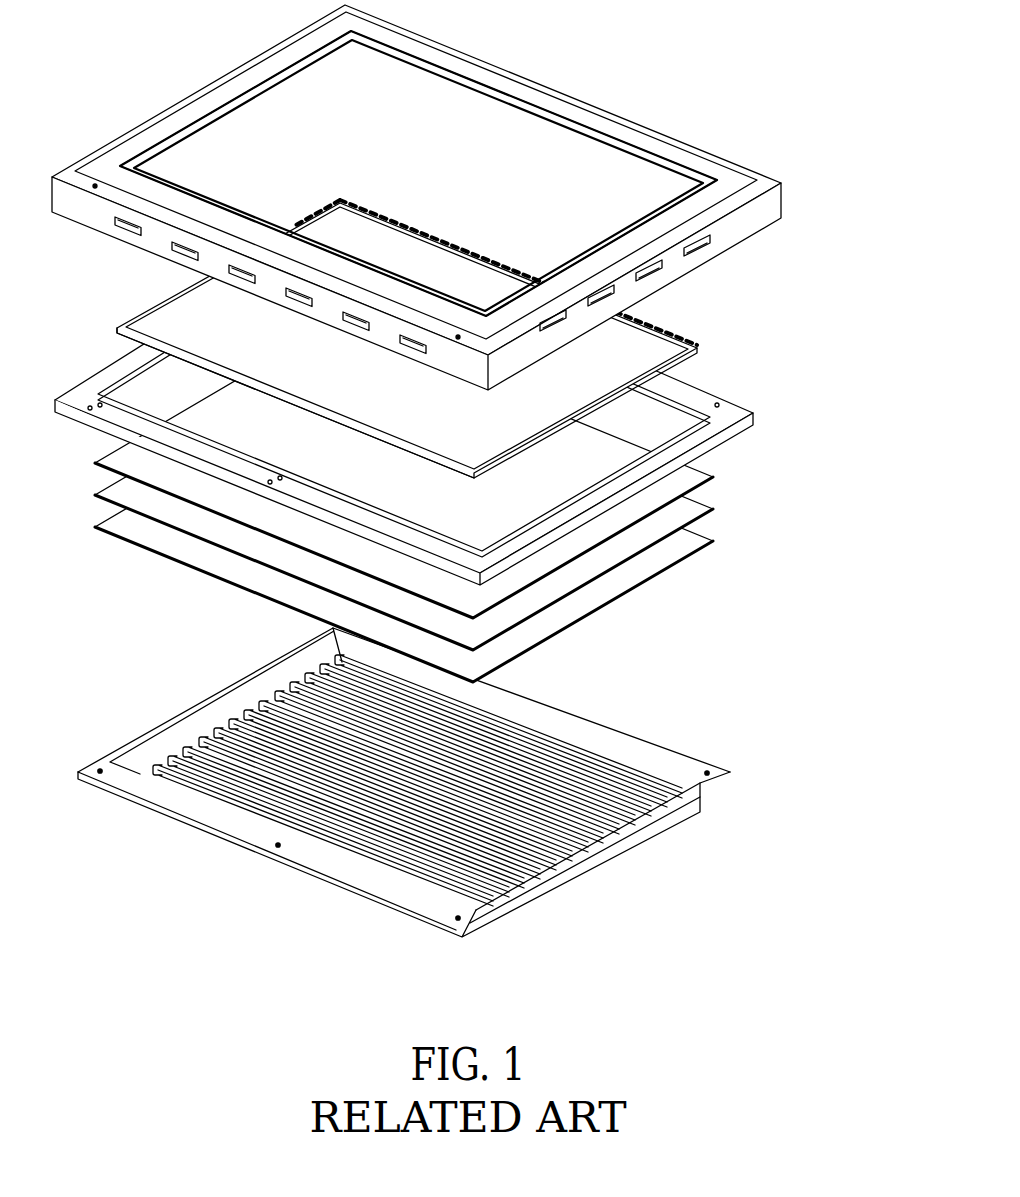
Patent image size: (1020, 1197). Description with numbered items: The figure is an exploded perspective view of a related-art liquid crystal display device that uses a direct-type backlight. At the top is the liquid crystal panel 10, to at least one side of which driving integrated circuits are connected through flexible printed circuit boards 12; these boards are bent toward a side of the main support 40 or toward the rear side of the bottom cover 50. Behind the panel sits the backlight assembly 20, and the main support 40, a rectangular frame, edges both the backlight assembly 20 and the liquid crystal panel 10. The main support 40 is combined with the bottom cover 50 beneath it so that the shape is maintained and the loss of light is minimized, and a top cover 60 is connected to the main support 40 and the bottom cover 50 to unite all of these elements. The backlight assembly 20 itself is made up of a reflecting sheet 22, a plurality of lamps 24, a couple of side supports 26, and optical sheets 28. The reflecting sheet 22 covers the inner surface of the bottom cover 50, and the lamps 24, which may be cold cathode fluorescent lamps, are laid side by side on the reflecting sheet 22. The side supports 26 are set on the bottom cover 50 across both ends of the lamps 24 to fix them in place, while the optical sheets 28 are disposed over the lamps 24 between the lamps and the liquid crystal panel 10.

The liquid crystal panel 10 is at (720, 340).
The flexible printed circuit boards 12 is at (618, 320).
The backlight assembly 20 is at (818, 508).
The reflecting sheet 22 is at (625, 763).
The lamps 24 is at (500, 742).
The side supports 26 is at (188, 728).
The optical sheets 28 is at (742, 463).
The main support 40 is at (748, 412).
The bottom cover 50 is at (577, 883).
The top cover 60 is at (778, 208).